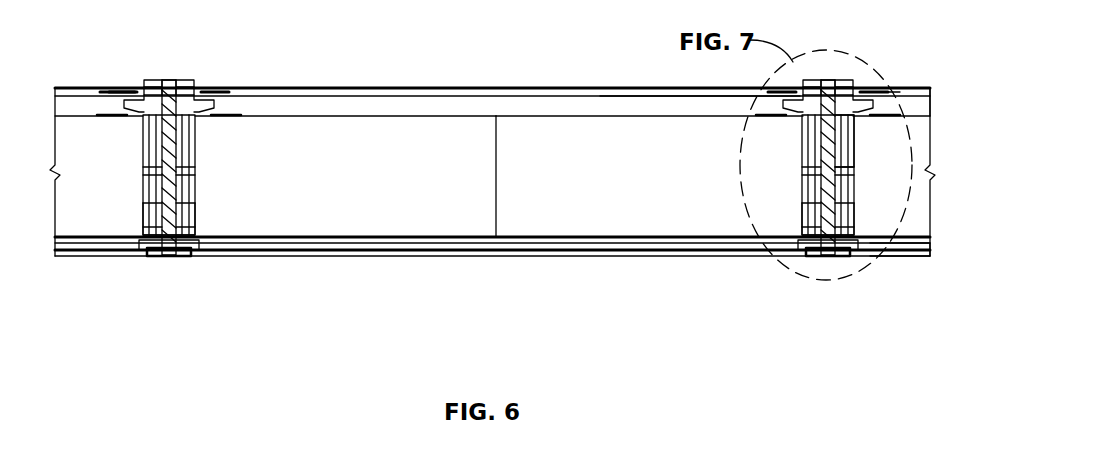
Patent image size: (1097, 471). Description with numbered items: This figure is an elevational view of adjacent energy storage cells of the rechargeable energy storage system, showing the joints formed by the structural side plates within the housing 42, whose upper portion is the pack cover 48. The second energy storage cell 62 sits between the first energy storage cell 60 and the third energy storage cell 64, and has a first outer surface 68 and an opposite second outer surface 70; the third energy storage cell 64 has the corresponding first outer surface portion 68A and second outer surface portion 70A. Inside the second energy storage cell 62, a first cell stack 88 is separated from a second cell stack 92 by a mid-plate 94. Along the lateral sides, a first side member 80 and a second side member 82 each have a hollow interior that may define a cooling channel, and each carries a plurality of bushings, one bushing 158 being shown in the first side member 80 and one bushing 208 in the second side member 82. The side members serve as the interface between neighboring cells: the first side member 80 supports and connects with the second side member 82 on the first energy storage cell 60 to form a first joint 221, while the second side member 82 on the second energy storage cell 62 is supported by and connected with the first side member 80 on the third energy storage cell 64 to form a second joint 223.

The housing 42 is at (395, 257).
The pack cover 48 is at (492, 86).
The first energy storage cell 60 is at (83, 108).
The second energy storage cell 62 is at (630, 112).
The third energy storage cell 64 is at (905, 112).
The first outer surface 68 is at (378, 117).
The first outer surface portion 68A is at (921, 88).
The second outer surface 70 is at (552, 242).
The second outer surface portion 70A is at (915, 250).
The first side member 80 is at (143, 183).
The second side member 82 is at (850, 124).
The first cell stack 88 is at (298, 137).
The second cell stack 92 is at (564, 134).
The mid-plate 94 is at (496, 170).
The bushing 158 is at (148, 212).
The bushing 208 is at (850, 138).
The first joint 221 is at (168, 277).
The second joint 223 is at (832, 285).